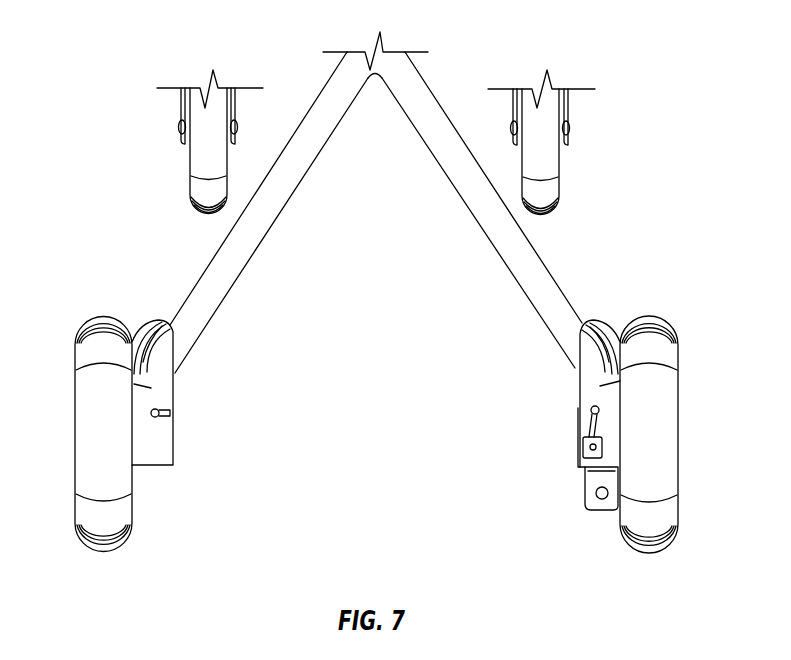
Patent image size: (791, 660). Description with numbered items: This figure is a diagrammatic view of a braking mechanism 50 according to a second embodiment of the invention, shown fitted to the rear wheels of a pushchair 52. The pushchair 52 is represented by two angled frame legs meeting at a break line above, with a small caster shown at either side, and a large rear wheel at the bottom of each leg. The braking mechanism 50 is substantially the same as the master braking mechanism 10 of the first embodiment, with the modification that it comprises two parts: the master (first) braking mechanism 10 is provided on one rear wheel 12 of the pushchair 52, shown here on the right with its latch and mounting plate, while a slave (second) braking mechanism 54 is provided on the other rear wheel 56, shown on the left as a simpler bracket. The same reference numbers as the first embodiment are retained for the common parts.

The master braking mechanism 10 is at (550, 452).
The rear wheel 12 is at (665, 482).
The braking mechanism 50 is at (373, 301).
The pushchair 52 is at (573, 233).
The slave braking mechanism 54 is at (187, 432).
The rear wheel 56 is at (96, 462).